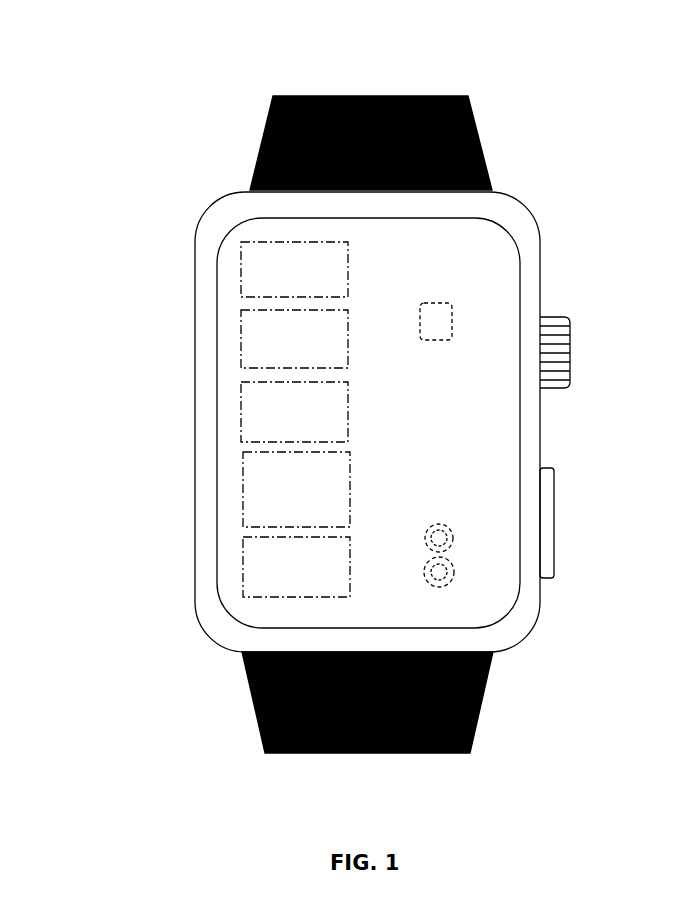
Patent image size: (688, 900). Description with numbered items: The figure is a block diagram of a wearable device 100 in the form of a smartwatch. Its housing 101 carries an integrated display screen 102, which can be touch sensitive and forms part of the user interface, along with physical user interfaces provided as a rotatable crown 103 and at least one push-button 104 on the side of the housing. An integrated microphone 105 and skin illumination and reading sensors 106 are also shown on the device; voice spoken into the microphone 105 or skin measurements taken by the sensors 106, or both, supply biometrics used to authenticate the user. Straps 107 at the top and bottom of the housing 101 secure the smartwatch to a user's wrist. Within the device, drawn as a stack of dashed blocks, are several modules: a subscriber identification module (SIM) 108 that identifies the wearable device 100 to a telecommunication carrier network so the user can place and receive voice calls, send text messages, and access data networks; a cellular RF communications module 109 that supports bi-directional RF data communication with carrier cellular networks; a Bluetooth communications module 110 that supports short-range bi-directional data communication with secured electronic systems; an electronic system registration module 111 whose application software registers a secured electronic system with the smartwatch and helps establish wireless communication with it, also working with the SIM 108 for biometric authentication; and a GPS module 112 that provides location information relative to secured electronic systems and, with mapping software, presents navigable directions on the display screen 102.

The wearable device 100 is at (130, 100).
The housing 101 is at (207, 228).
The display screen 102 is at (488, 246).
The rotatable crown 103 is at (570, 350).
The push-button 104 is at (549, 502).
The microphone 105 is at (452, 318).
The skin illumination/reading sensors 106 is at (447, 558).
The straps 107 is at (484, 142).
The subscriber identification module (SIM) 108 is at (258, 265).
The cellular RF communications module 109 is at (263, 342).
The Bluetooth communications module 110 is at (260, 413).
The electronic system registration module 111 is at (257, 495).
The GPS module 112 is at (258, 567).